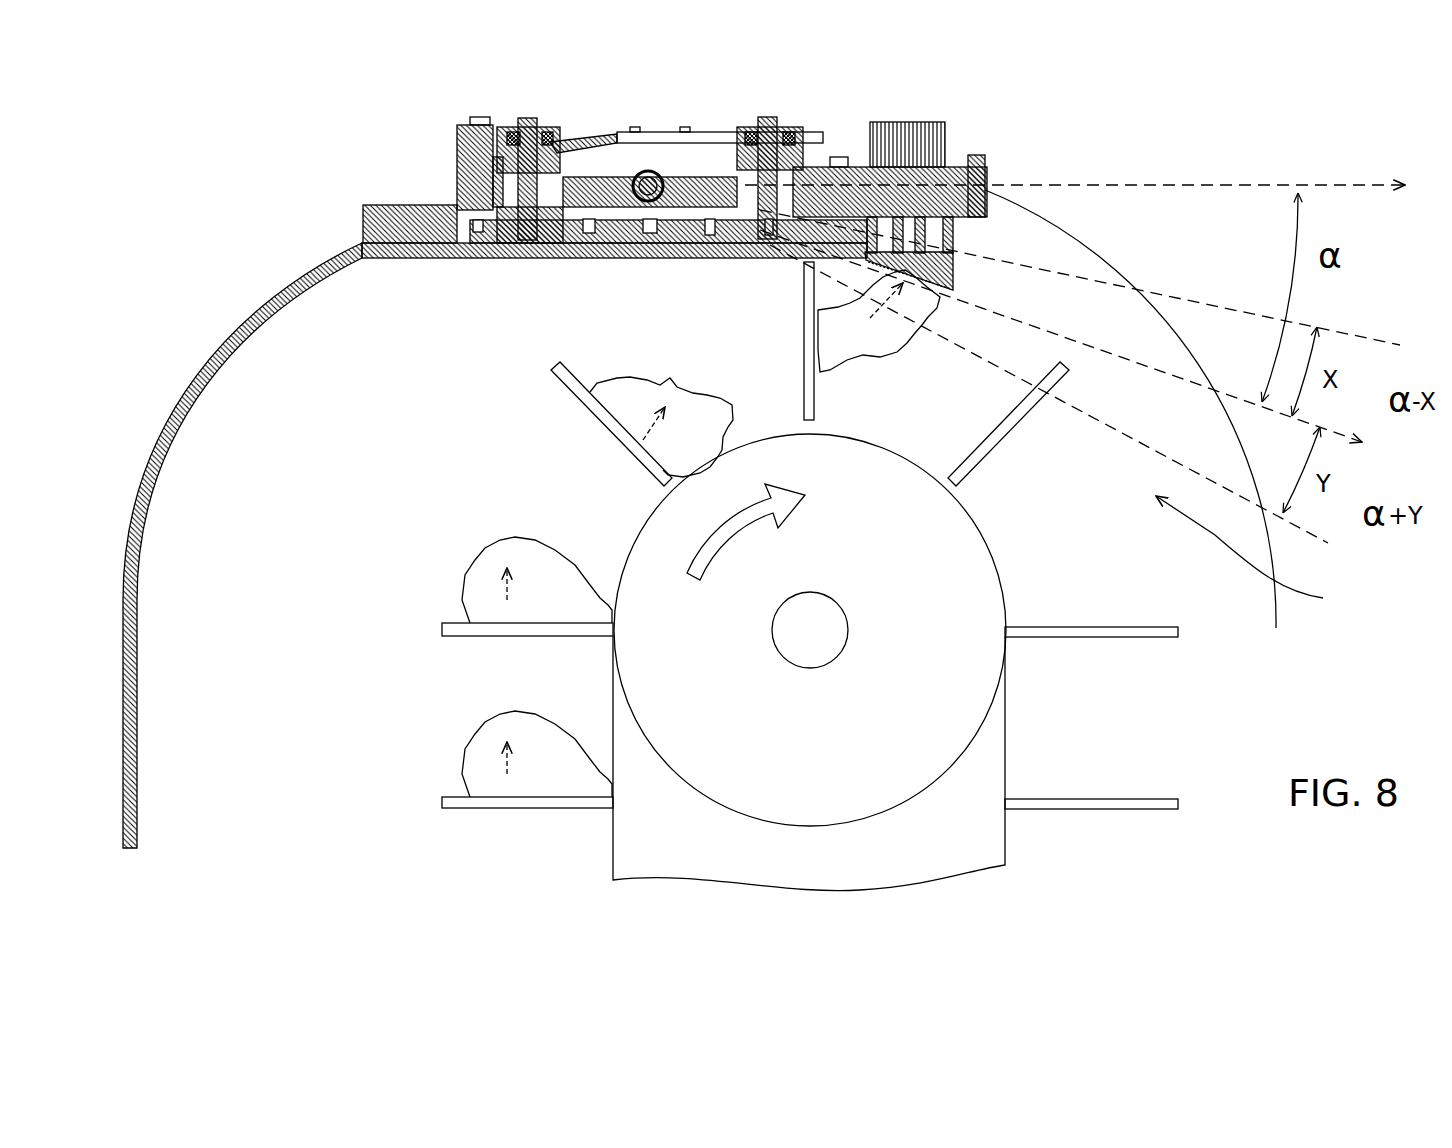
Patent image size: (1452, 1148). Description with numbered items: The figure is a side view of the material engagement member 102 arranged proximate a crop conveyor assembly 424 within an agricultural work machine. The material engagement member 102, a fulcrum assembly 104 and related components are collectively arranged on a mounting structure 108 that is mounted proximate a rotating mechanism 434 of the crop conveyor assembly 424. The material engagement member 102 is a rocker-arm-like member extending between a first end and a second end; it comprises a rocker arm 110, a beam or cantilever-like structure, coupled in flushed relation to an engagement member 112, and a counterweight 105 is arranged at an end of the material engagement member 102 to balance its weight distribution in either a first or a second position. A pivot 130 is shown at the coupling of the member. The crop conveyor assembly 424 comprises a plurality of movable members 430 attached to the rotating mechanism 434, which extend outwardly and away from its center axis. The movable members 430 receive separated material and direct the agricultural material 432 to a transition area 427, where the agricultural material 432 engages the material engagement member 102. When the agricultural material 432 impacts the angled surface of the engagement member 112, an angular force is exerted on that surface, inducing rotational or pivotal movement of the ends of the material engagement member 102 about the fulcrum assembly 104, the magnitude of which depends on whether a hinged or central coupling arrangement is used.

The material engagement member 102 is at (665, 128).
The fulcrum assembly 104 is at (668, 230).
The counterweight 105 is at (462, 135).
The mounting structure 108 is at (1108, 268).
The rocker arm 110 is at (828, 158).
The engagement member 112 is at (944, 300).
The pivot pin 130 is at (646, 174).
The crop conveyor assembly 424 is at (866, 906).
The transition area 427 is at (1265, 555).
The movable members 430 is at (1040, 637).
The agricultural material 432 is at (712, 446).
The rotating mechanism 434 is at (940, 775).